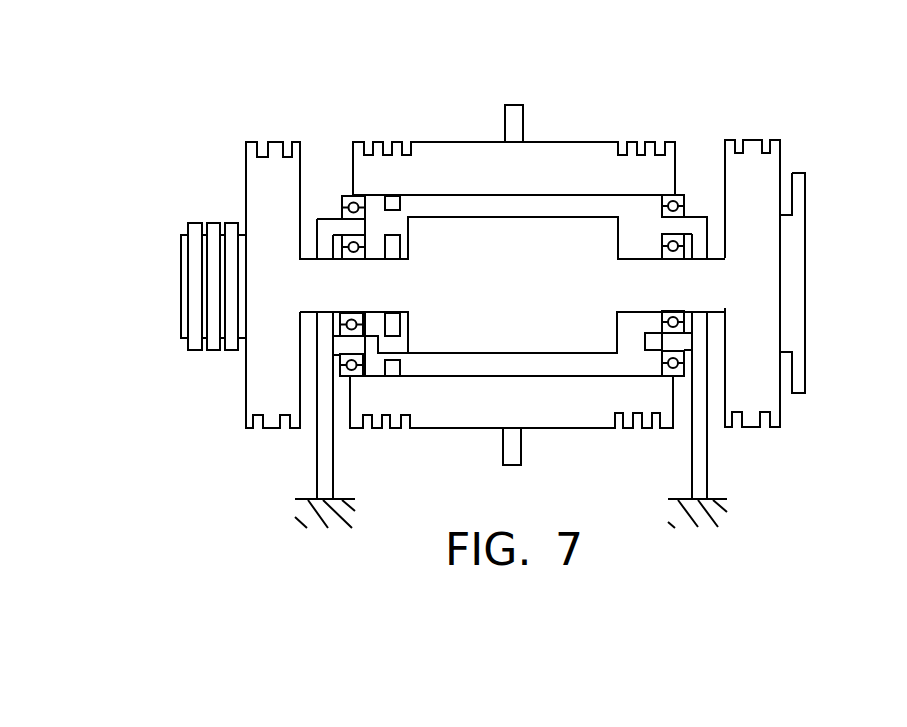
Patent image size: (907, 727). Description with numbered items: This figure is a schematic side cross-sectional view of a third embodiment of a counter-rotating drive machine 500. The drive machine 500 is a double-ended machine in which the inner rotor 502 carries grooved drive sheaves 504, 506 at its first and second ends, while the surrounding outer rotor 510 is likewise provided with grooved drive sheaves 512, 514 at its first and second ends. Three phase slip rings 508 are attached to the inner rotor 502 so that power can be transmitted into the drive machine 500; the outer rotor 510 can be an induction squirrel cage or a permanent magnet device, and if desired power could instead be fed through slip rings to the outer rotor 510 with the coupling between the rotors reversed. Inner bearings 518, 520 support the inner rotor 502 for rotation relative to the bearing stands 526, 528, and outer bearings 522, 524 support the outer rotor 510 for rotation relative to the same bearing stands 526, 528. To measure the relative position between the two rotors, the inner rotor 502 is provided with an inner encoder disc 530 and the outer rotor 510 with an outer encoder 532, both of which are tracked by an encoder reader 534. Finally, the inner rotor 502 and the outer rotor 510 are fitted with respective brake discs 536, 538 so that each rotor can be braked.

The counter-rotating drive machine 500 is at (370, 96).
The inner rotor 502 is at (536, 297).
The drive sheave 504 is at (263, 195).
The drive sheave 506 is at (767, 173).
The three phase slip rings 508 is at (232, 222).
The outer rotor 510 is at (580, 160).
The drive sheave 512 is at (360, 175).
The drive sheave 514 is at (662, 167).
The inner bearing 518 is at (357, 260).
The inner bearing 520 is at (670, 260).
The outer bearing 522 is at (342, 358).
The outer bearing 524 is at (690, 365).
The bearing stand 526 is at (322, 453).
The bearing stand 528 is at (692, 450).
The inner encoder disc 530 is at (392, 245).
The outer encoder 532 is at (397, 208).
The encoder reader 534 is at (396, 349).
The brake disc 536 is at (798, 228).
The brake disc 538 is at (510, 125).